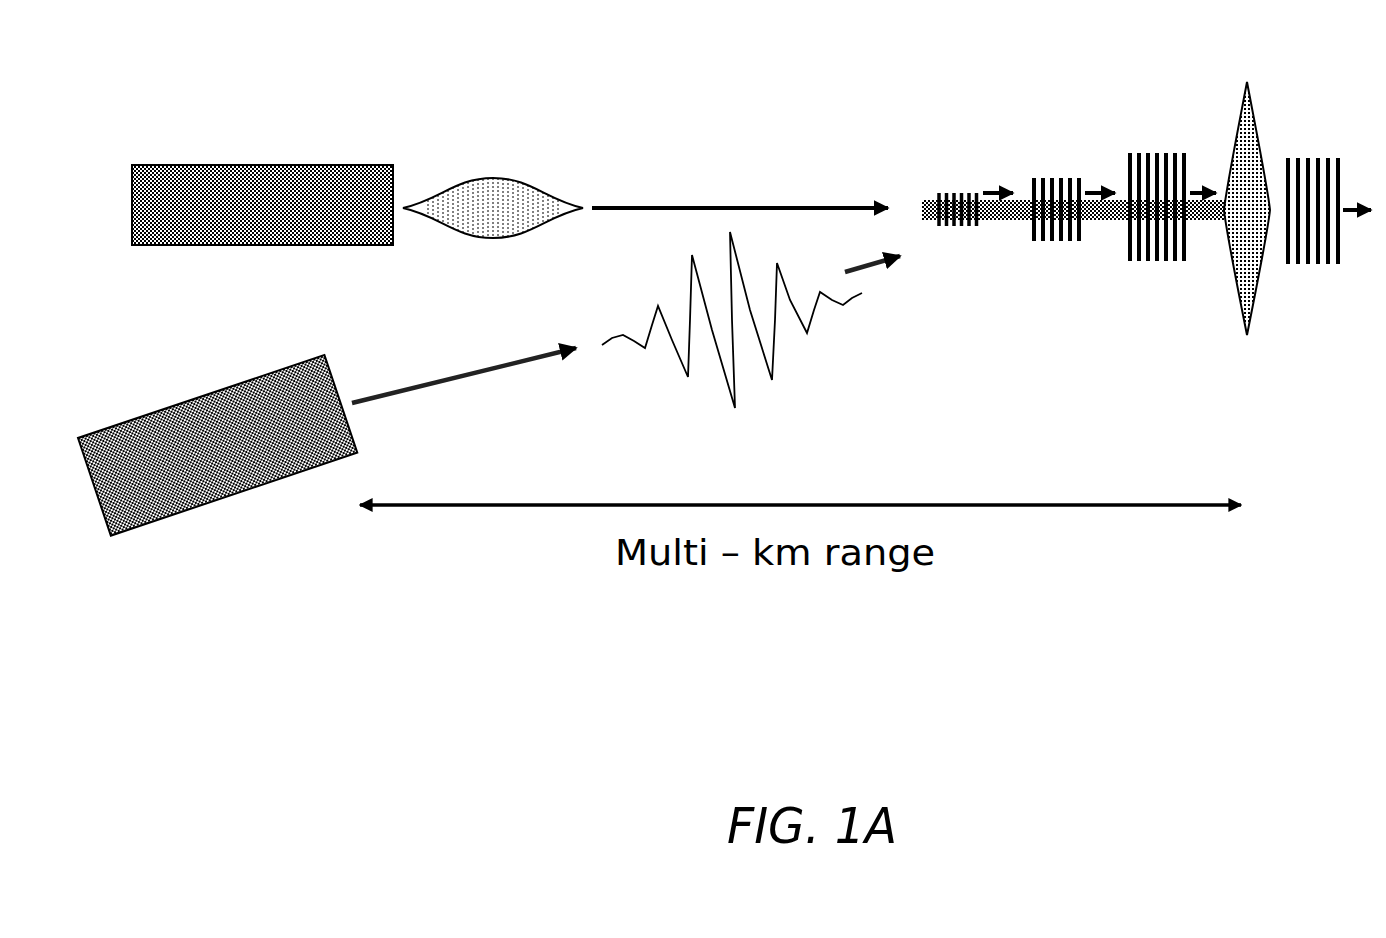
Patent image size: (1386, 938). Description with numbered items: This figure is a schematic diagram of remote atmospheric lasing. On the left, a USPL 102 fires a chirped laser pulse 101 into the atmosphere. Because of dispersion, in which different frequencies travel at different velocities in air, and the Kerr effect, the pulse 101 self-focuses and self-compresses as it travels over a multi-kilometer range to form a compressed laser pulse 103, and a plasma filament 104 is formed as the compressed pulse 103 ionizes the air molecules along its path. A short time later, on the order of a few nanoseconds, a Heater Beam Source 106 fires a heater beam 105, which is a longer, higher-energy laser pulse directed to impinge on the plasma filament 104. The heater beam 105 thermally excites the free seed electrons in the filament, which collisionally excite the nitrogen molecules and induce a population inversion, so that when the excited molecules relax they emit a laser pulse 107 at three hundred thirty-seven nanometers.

The laser pulse 101 is at (486, 167).
The USPL 102 is at (213, 146).
The compressed laser pulse 103 is at (1227, 86).
The plasma filament 104 is at (1103, 218).
The heater beam 105 is at (798, 356).
The Heater Beam Source 106 is at (187, 397).
The laser pulse 107 is at (1316, 144).